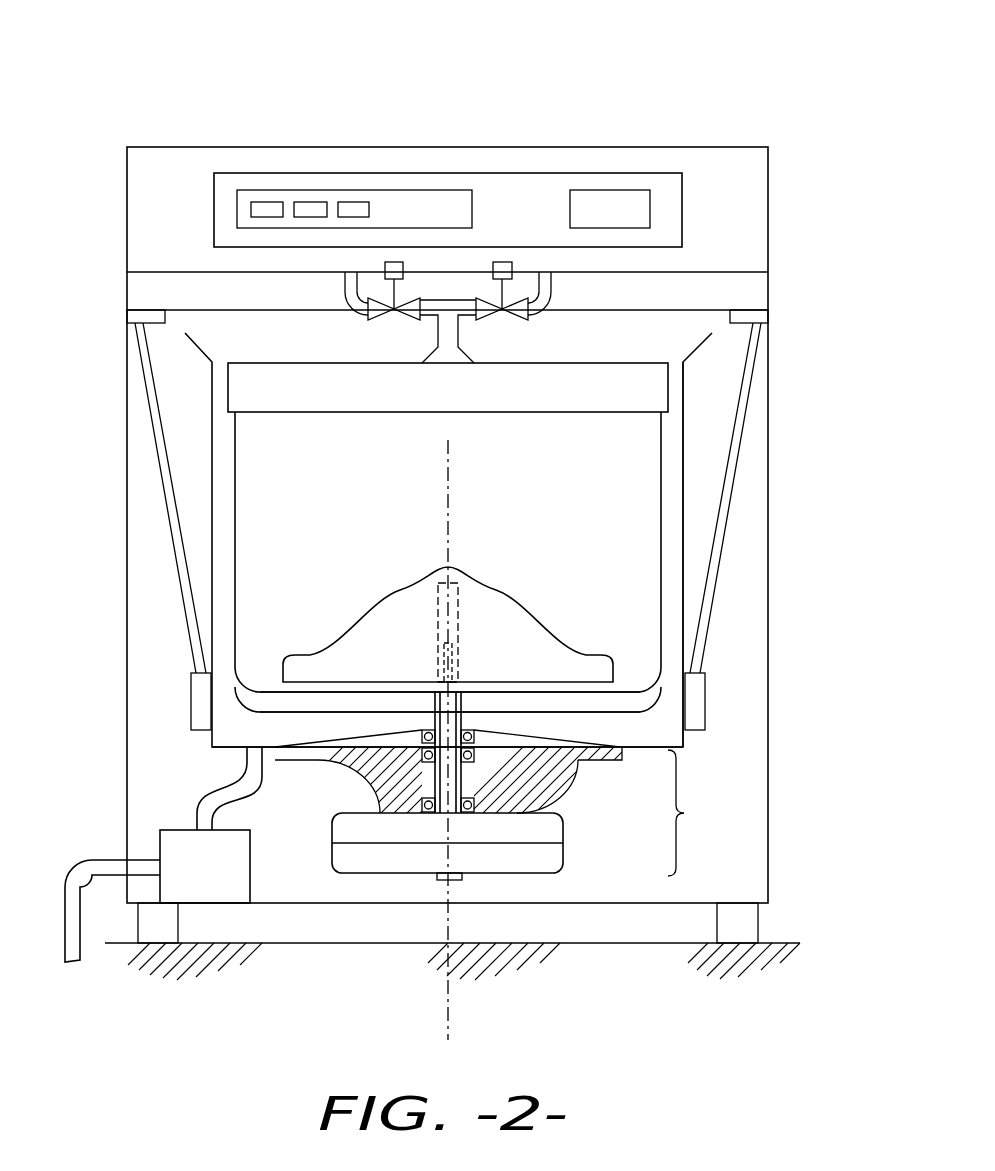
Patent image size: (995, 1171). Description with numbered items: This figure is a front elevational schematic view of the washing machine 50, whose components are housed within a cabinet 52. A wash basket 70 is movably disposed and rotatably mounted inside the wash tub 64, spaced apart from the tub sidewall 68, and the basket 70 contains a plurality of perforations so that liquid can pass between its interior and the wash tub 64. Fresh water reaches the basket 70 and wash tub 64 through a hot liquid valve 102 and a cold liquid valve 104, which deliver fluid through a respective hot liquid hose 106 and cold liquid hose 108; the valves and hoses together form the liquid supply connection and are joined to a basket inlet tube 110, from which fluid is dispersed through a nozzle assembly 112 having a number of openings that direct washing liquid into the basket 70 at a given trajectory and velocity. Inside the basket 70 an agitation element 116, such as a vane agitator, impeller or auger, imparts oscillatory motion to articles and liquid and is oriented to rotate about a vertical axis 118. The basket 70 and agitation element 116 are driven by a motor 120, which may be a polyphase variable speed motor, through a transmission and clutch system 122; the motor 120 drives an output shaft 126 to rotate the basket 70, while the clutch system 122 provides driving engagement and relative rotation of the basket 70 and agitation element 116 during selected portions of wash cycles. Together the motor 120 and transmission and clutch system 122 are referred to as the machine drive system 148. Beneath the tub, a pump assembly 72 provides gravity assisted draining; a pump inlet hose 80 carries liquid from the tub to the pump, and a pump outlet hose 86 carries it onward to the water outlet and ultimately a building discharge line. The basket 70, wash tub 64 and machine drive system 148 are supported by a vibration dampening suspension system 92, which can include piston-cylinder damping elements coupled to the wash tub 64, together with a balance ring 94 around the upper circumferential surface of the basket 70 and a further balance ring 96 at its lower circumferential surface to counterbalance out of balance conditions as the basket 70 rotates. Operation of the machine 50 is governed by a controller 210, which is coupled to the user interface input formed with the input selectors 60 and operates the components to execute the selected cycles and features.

The washing machine 50 is at (196, 78).
The cabinet 52 is at (768, 477).
The input selectors 60 is at (213, 738).
The wash tub 64 is at (212, 462).
The tub sidewall 68 is at (683, 537).
The wash basket 70 is at (235, 552).
The pump assembly 72 is at (176, 844).
The pump inlet hose 80 is at (203, 793).
The pump outlet hose 86 is at (73, 876).
The vibration dampening suspension system 92 is at (150, 402).
The balance ring 94 is at (287, 383).
The balance ring 96 is at (647, 697).
The hot liquid valve 102 is at (397, 268).
The cold liquid valve 104 is at (505, 268).
The hot liquid hose 106 is at (348, 297).
The cold liquid hose 108 is at (550, 297).
The basket inlet tube 110 is at (467, 348).
The nozzle assembly 112 is at (430, 348).
The agitation element 116 is at (486, 593).
The vertical axis 118 is at (448, 515).
The motor 120 is at (548, 865).
The transmission and clutch system 122 is at (548, 832).
The output shaft 126 is at (437, 778).
The machine drive system 148 is at (702, 813).
The controller 210 is at (668, 198).